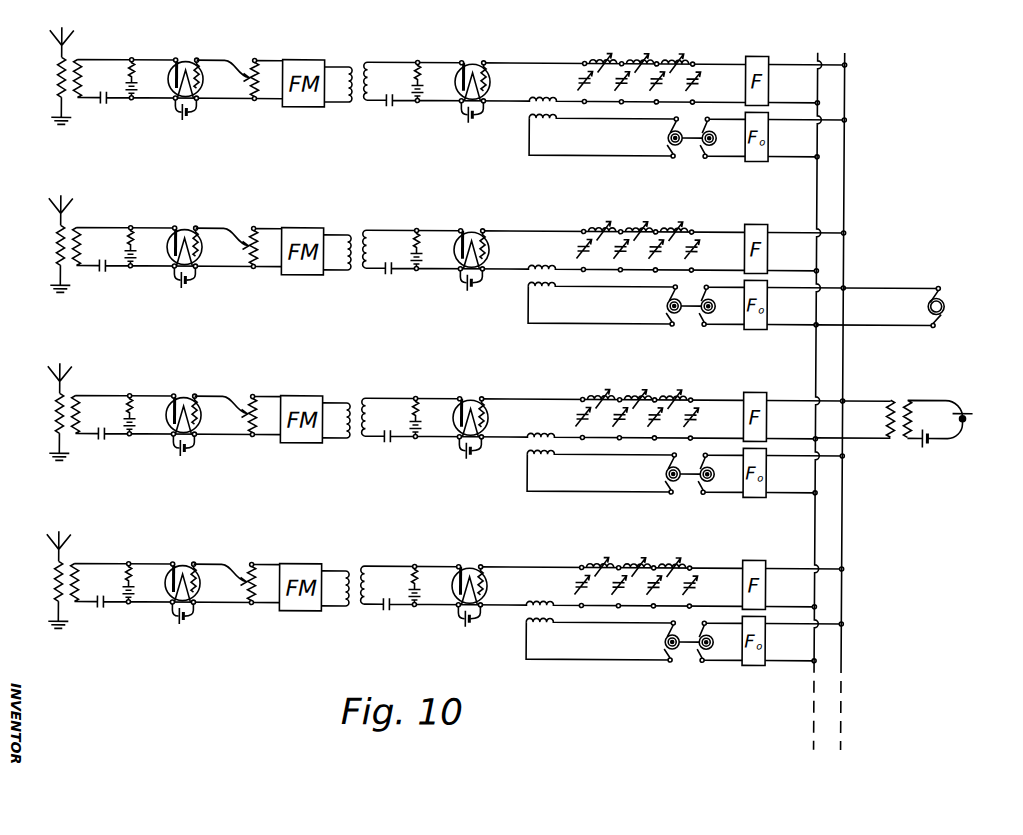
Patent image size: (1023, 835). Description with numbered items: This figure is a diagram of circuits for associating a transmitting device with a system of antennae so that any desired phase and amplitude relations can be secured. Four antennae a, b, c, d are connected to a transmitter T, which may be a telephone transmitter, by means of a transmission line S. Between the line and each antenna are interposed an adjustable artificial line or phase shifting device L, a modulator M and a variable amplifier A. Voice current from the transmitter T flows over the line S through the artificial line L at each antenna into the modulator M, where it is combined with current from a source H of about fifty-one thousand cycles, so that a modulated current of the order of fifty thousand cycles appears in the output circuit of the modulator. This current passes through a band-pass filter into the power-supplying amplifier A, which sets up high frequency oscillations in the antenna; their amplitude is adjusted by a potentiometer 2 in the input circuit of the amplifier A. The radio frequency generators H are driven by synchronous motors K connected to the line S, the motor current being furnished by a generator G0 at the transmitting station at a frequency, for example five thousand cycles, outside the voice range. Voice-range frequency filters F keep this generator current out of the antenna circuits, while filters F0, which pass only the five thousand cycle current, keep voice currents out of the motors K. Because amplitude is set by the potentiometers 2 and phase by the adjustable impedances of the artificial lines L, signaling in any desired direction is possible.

The antenna a is at (54, 75).
The antenna b is at (53, 243).
The antenna c is at (52, 411).
The antenna d is at (51, 579).
The variable amplifier A is at (185, 57).
The potentiometer 2 is at (251, 85).
The modulator M is at (472, 58).
The adjustable artificial line or phase shifting device L is at (637, 318).
The voice-range frequency filter F is at (755, 332).
The filter F0 is at (755, 388).
The radio frequency generator (source) H is at (671, 155).
The synchronous motor K is at (716, 155).
The transmission line S is at (847, 401).
The generator G0 is at (898, 307).
The transmitter T is at (902, 424).